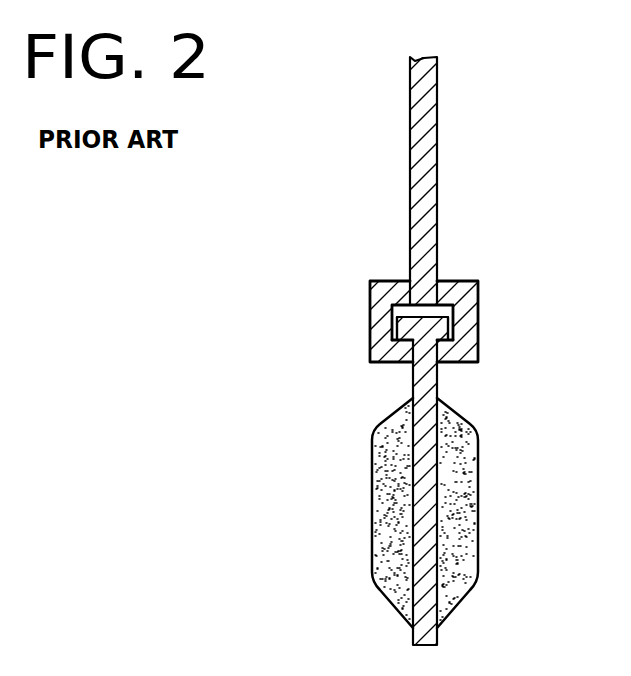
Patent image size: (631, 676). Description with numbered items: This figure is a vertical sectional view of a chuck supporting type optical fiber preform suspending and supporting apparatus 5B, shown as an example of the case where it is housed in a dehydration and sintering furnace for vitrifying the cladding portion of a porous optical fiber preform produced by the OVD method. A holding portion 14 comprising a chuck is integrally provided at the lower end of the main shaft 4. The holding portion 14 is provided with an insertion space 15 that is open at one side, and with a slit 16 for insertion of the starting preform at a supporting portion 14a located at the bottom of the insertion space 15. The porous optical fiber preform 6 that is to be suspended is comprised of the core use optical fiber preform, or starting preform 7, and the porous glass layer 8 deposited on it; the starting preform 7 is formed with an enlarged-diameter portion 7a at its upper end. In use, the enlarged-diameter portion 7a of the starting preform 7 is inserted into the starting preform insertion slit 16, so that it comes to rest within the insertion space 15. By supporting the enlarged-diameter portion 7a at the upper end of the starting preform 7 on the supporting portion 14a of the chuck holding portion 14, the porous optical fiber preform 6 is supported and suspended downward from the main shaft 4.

The main shaft 4 is at (430, 138).
The chuck supporting type optical fiber preform suspending and supporting apparatus 5B is at (315, 338).
The porous optical fiber preform 6 is at (364, 508).
The starting preform 7 is at (315, 338).
The enlarged-diameter portion 7a is at (397, 331).
The porous glass layer 8 is at (468, 513).
The holding portion 14 is at (315, 338).
The supporting portion 14a is at (402, 352).
The insertion space 15 is at (440, 310).
The slit 16 is at (418, 352).